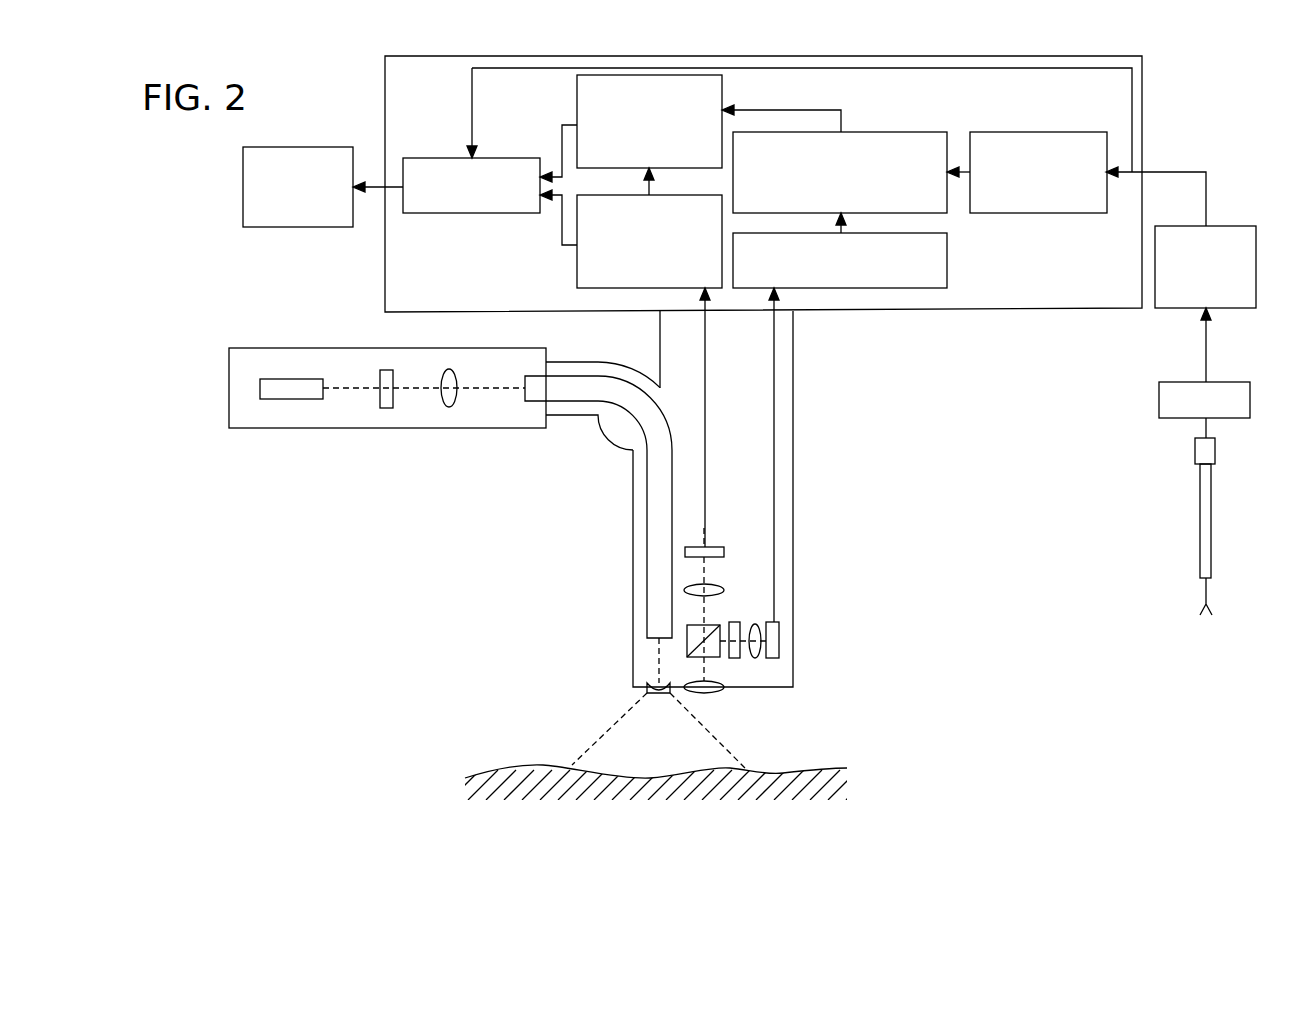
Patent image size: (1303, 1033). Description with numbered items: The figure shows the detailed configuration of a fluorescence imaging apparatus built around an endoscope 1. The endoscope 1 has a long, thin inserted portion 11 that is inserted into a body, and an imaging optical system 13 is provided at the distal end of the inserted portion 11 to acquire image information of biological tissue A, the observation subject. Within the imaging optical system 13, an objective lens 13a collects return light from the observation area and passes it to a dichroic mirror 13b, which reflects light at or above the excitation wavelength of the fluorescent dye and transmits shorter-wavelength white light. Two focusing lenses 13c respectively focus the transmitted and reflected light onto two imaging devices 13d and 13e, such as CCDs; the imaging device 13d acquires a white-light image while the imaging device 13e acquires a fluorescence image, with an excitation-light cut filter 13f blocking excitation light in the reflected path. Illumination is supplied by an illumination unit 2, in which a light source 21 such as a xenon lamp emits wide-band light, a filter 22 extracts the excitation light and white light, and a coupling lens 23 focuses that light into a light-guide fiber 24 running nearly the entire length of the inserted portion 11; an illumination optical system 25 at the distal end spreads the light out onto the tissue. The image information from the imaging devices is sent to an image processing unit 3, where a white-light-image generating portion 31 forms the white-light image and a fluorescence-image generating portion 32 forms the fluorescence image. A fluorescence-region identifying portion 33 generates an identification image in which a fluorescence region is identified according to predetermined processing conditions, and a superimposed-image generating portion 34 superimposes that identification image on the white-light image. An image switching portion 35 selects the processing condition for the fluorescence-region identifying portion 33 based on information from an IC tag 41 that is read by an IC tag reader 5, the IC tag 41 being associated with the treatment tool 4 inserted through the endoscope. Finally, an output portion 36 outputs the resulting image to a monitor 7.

The endoscope 1 is at (810, 417).
The illumination unit 2 is at (387, 386).
The image processing unit 3 is at (950, 312).
The treatment tool 4 is at (1195, 457).
The IC tag reader 5 is at (1232, 226).
The monitor 7 is at (300, 147).
The inserted portion 11 is at (793, 475).
The imaging optical system 13 is at (810, 577).
The objective lens 13a is at (712, 693).
The dichroic mirror 13b is at (713, 625).
The focusing lens 13c is at (714, 588).
The imaging device 13d is at (706, 545).
The imaging device 13e is at (779, 635).
The excitation-light cut filter 13f is at (736, 658).
The light source 21 is at (290, 399).
The filter 22 is at (386, 408).
The coupling lens 23 is at (449, 407).
The light-guide fiber 24 is at (647, 502).
The illumination optical system 25 is at (633, 683).
The white-light-image generating portion 31 is at (577, 272).
The fluorescence-image generating portion 32 is at (947, 257).
The fluorescence-region identifying portion 33 is at (878, 132).
The superimposed-image generating portion 34 is at (577, 100).
The image switching portion 35 is at (1083, 132).
The output portion 36 is at (418, 158).
The IC tag 41 is at (1159, 403).
The biological tissue A is at (533, 766).